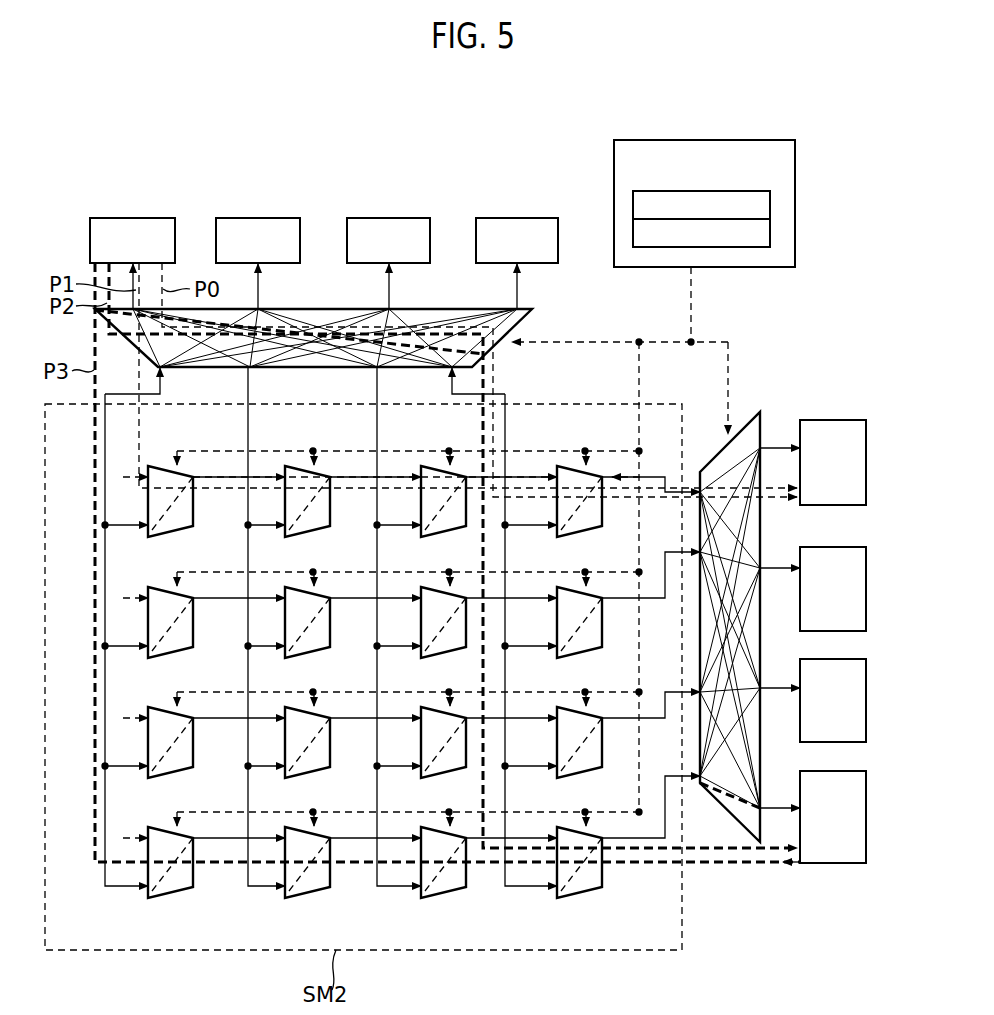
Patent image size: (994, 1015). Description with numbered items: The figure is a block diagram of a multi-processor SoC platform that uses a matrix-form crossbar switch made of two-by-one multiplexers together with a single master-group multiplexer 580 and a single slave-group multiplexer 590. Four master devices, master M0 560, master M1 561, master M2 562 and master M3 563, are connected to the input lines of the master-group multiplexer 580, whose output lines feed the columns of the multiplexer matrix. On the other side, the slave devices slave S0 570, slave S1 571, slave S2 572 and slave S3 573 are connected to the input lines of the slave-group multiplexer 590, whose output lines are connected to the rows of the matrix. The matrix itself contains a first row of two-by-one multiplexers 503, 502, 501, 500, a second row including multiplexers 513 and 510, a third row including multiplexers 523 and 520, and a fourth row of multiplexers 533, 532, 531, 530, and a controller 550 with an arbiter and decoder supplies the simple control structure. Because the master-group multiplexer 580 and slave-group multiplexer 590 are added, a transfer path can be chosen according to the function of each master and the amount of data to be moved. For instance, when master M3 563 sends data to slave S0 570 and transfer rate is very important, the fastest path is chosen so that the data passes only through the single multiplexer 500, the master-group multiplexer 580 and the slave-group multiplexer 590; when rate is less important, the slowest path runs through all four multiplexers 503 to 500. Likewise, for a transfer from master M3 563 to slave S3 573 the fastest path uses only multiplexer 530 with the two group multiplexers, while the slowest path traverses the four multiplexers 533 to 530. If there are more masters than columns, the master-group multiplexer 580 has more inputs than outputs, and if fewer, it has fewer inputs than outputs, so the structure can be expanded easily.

The 2×1 multiplexer 500 is at (563, 466).
The 2×1 multiplexer 501 is at (426, 466).
The 2×1 multiplexer 502 is at (289, 466).
The 2×1 multiplexer 503 is at (152, 466).
The 2×1 multiplexer 510 is at (602, 625).
The 2×1 multiplexer 513 is at (148, 622).
The 2×1 multiplexer 520 is at (602, 745).
The 2×1 multiplexer 523 is at (148, 742).
The 2×1 multiplexer 530 is at (590, 896).
The 2×1 multiplexer 531 is at (454, 896).
The 2×1 multiplexer 532 is at (318, 896).
The 2×1 multiplexer 533 is at (148, 852).
The controller 550 is at (796, 204).
The master device M0 560 is at (540, 218).
The master device M1 561 is at (395, 218).
The master device M2 562 is at (260, 218).
The master M3 563 is at (134, 218).
The slave S0 570 is at (866, 460).
The slave device S1 571 is at (866, 580).
The slave device S2 572 is at (866, 691).
The slave S3 573 is at (866, 811).
The master-group multiplexer 580 is at (300, 308).
The slave-group multiplexer 590 is at (760, 412).